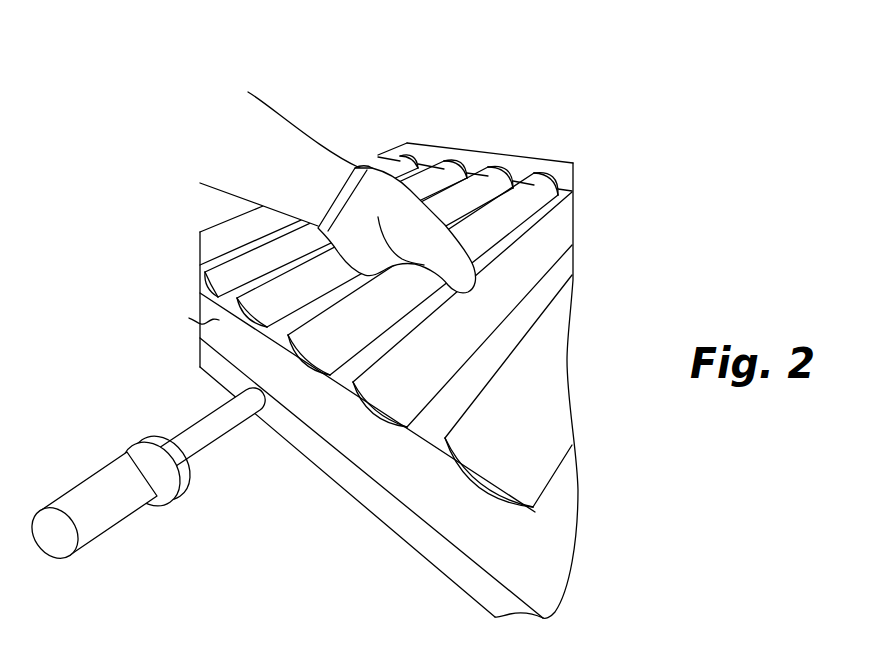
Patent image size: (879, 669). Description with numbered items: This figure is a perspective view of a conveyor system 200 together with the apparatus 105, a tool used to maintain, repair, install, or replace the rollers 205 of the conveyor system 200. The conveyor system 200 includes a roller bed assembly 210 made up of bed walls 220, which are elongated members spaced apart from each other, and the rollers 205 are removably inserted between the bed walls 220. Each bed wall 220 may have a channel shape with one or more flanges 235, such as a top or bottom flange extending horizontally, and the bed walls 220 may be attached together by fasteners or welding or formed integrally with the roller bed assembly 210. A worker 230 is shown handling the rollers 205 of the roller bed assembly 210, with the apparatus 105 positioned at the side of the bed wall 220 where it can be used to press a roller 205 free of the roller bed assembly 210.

The apparatus 105 is at (92, 450).
The conveyor system 200 is at (578, 474).
The roller 205 is at (547, 354).
The roller bed assembly 210 is at (383, 503).
The bed wall 220 is at (545, 578).
The worker 230 is at (208, 104).
The flange 235 is at (217, 322).